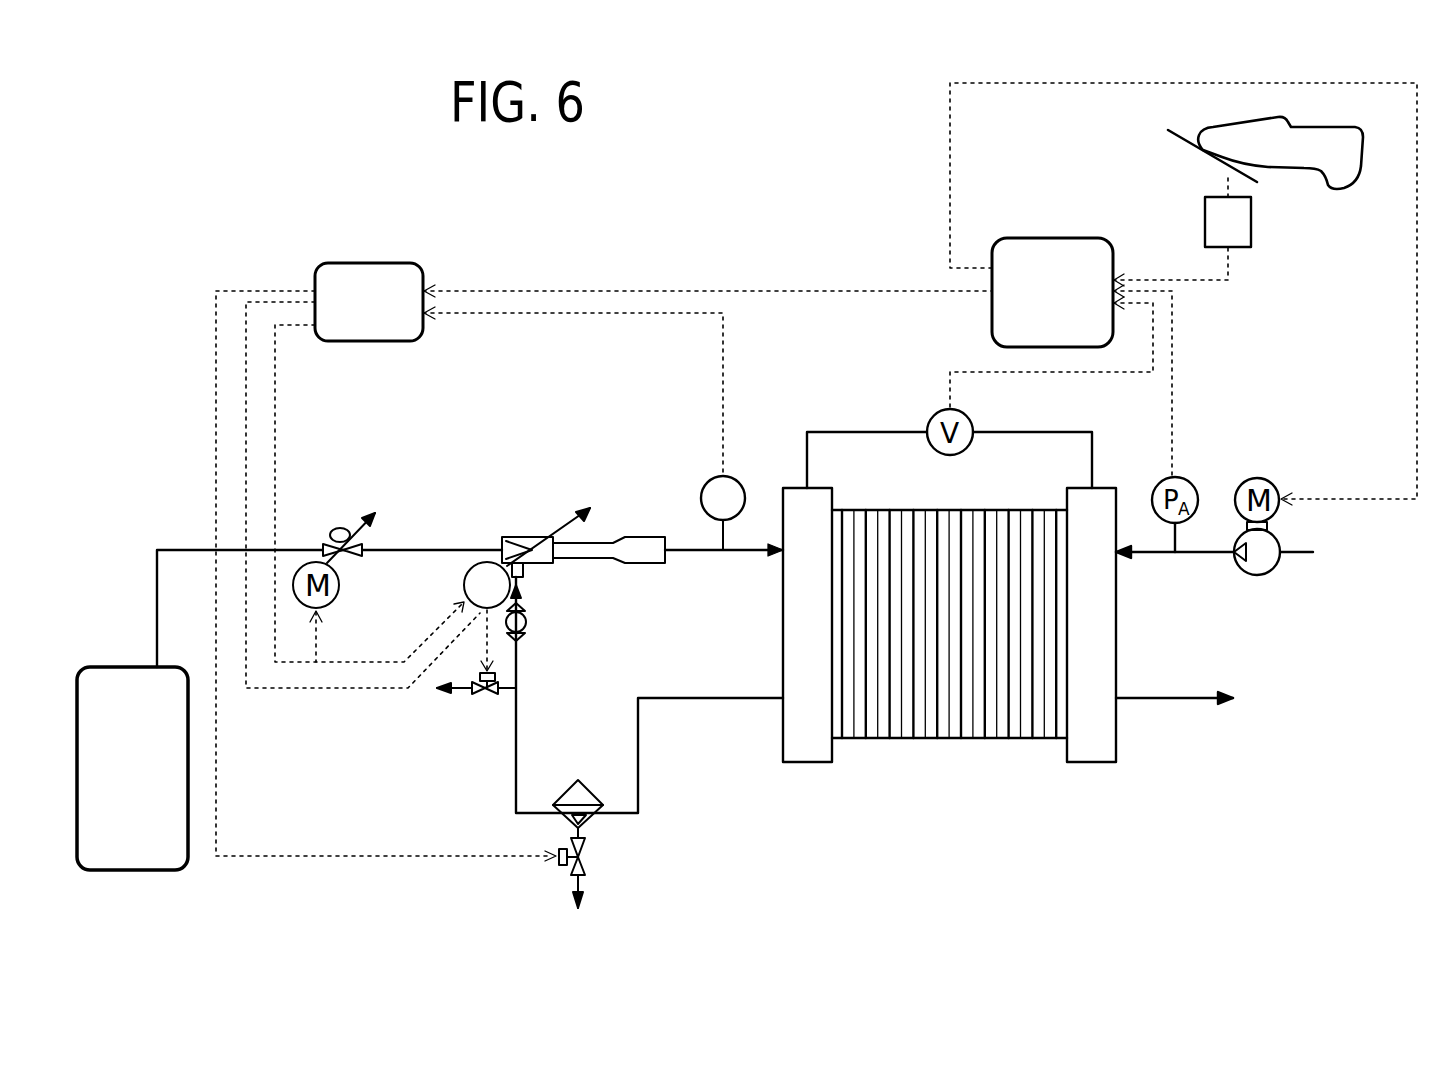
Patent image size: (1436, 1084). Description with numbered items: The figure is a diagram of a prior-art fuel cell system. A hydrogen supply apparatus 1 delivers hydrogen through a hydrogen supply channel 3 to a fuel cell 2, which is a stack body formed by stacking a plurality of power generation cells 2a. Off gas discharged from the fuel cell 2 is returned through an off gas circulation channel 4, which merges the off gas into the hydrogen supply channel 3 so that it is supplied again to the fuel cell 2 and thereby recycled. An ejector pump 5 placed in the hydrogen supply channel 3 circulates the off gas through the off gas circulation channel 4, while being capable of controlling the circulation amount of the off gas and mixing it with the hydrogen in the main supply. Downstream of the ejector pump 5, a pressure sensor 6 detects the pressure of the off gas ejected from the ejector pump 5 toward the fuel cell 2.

The hydrogen supply apparatus 1 is at (143, 872).
The fuel cell 2 is at (949, 671).
The power generation cells 2a is at (895, 740).
The hydrogen supply channel 3 is at (157, 605).
The off gas circulation channel 4 is at (715, 700).
The ejector pump 5 is at (518, 537).
The pressure sensor 6 is at (700, 497).